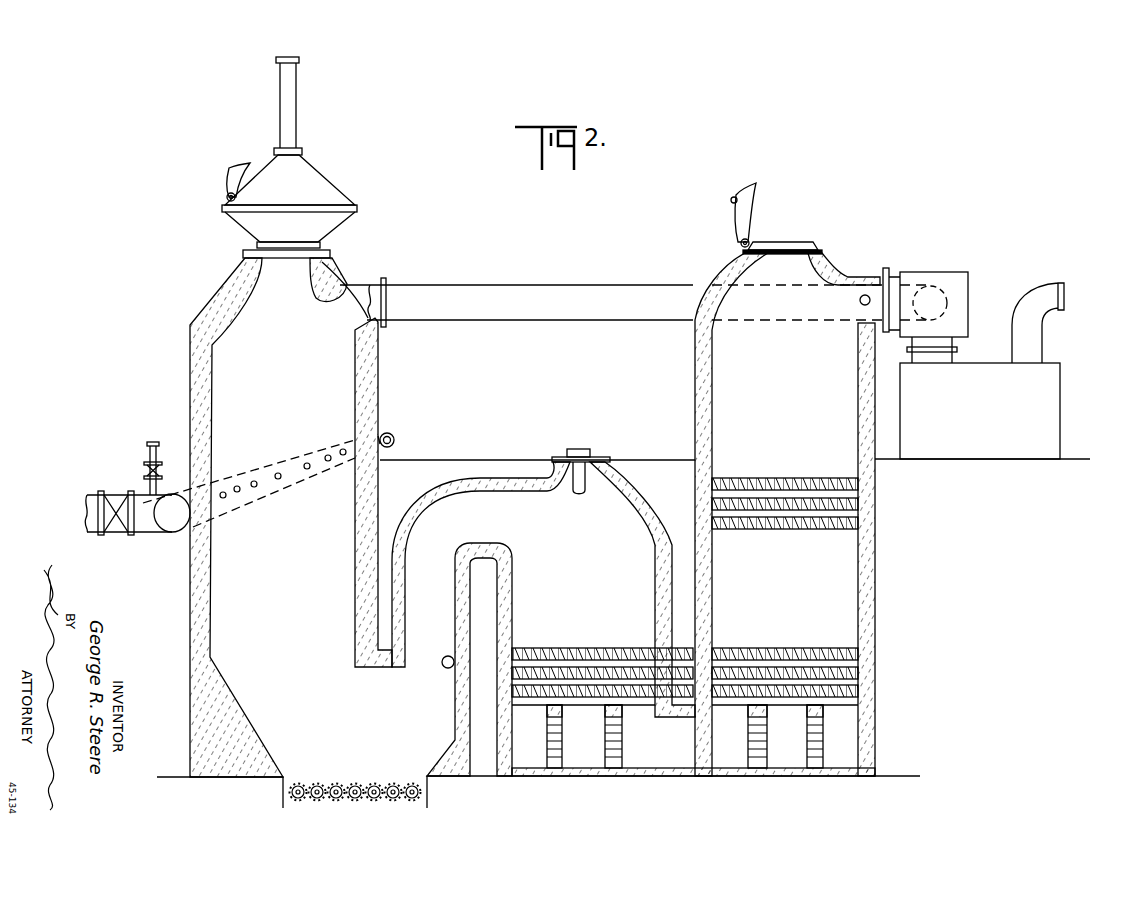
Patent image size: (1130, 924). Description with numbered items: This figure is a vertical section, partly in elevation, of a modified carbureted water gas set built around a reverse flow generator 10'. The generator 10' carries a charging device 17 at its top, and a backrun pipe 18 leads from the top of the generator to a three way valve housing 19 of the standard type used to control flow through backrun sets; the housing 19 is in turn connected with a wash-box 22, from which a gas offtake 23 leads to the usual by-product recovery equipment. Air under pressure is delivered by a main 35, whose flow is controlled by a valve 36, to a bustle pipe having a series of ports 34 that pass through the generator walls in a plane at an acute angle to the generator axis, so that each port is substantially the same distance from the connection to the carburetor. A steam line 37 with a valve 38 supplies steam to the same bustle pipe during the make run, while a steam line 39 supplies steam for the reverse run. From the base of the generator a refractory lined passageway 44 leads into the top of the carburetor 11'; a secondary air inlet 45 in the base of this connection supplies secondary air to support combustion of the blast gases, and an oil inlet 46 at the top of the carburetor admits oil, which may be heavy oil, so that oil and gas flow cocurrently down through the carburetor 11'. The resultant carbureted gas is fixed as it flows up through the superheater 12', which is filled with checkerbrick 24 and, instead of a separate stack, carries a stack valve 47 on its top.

The generator 10' is at (419, 517).
The carburetor 11' is at (642, 589).
The superheater 12' is at (718, 514).
The charging device 17 is at (332, 183).
The backrun pipe 18 is at (512, 293).
The three way valve housing 19 is at (940, 272).
The wash-box 22 is at (1052, 405).
The gas offtake 23 is at (1045, 290).
The checkerbrick 24 is at (585, 672).
The ports 34 is at (378, 434).
The main 35 is at (92, 532).
The valve 36 is at (117, 494).
The steam line 37 is at (153, 440).
The valve 38 is at (148, 470).
The steam line 39 is at (858, 300).
The refractory lined passageway 44 is at (483, 505).
The secondary air inlet 45 is at (445, 668).
The oil inlet 46 is at (578, 455).
The stack valve 47 is at (758, 210).